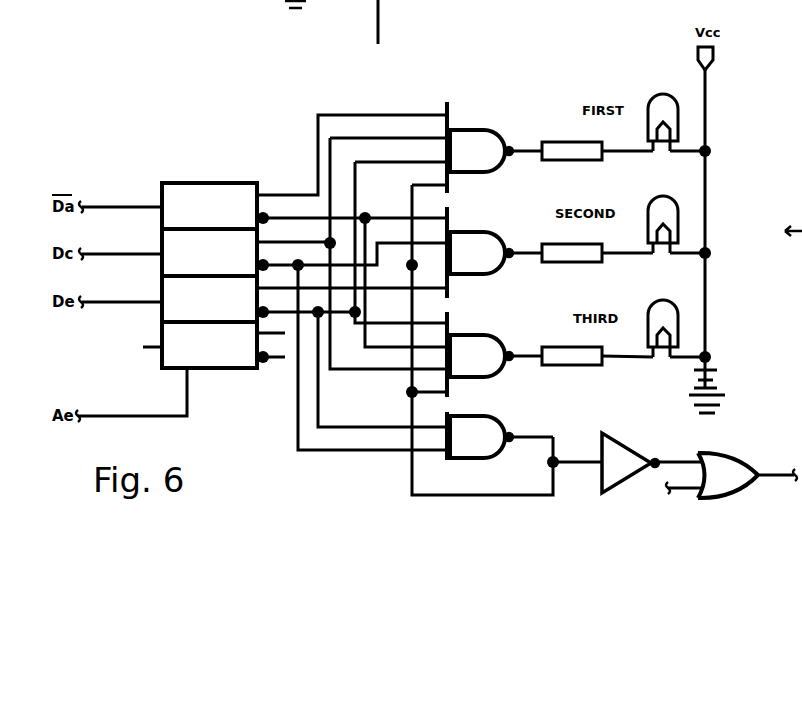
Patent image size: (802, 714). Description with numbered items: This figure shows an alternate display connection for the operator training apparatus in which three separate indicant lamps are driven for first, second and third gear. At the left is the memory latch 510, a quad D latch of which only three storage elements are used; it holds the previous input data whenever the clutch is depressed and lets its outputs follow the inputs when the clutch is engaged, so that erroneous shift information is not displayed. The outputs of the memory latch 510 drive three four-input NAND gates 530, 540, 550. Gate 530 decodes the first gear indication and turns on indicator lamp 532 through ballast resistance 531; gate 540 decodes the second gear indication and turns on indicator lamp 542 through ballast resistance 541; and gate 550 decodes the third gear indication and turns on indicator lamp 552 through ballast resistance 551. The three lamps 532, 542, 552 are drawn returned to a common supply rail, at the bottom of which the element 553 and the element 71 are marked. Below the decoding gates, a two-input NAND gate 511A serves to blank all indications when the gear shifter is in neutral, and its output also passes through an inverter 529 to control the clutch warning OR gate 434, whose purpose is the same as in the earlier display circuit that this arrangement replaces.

The memory latch 510 is at (219, 182).
The 4-input NAND gate 530 is at (494, 129).
The ballast resistance 531 is at (577, 167).
The indicator lamp 532 is at (647, 98).
The 4-input NAND gate 540 is at (497, 231).
The ballast resistance 541 is at (592, 270).
The indicator lamp 542 is at (685, 188).
The 4-input NAND gate 550 is at (502, 326).
The ballast resistance 551 is at (572, 377).
The indicator lamp 552 is at (684, 293).
The battery ground 553 is at (724, 378).
The 2-input NAND gate 511A is at (507, 428).
The inverter 529 is at (638, 446).
The clutch warning OR gate 434 is at (765, 447).
The battery 71 is at (790, 188).